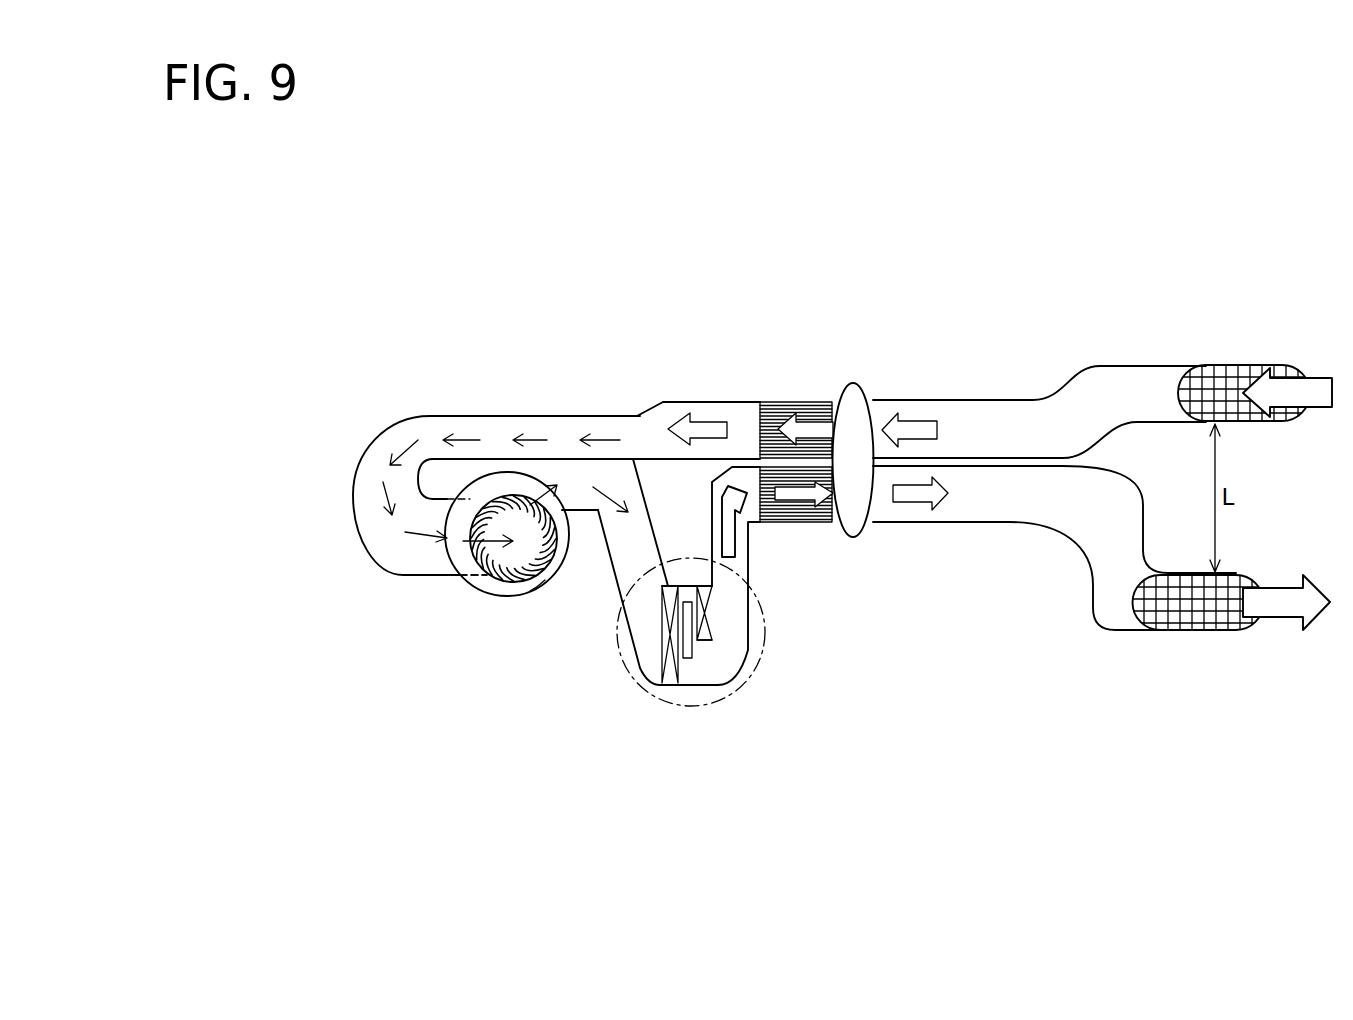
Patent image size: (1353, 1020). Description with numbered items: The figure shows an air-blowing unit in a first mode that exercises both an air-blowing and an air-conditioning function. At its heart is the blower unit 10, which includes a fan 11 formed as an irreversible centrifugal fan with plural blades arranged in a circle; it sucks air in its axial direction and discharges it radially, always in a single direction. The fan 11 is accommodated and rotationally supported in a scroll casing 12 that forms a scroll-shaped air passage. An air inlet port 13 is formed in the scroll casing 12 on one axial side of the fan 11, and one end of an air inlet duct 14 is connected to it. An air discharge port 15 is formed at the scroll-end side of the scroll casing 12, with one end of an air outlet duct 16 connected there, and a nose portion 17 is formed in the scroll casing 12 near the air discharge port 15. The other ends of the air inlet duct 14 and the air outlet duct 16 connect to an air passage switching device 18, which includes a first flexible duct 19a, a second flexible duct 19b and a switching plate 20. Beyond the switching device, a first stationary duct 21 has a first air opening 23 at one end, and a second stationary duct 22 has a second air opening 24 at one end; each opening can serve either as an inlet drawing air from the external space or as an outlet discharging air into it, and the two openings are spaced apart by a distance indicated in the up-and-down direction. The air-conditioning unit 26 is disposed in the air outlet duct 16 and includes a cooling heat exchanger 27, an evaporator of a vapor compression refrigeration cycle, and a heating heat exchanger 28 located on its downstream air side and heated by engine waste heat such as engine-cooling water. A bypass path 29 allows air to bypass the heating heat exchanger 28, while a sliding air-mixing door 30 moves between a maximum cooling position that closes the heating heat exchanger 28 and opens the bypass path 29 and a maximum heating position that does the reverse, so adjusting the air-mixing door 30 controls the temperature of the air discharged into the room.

The blower unit 10 is at (520, 615).
The fan 11 is at (550, 576).
The scroll casing 12 is at (480, 591).
The air inlet port 13 is at (560, 582).
The air inlet duct 14 is at (470, 416).
The air discharge port 15 is at (510, 488).
The air outlet duct 16 is at (620, 597).
The nose portion 17 is at (562, 510).
The air passage switching device 18 is at (766, 472).
The first flexible duct 19a is at (772, 400).
The second flexible duct 19b is at (797, 525).
The switching plate 20 is at (857, 390).
The first stationary duct 21 is at (1008, 400).
The second stationary duct 22 is at (975, 514).
The first air opening 23 is at (1222, 363).
The second air opening 24 is at (1192, 632).
The air-conditioning unit 26 is at (779, 627).
The cooling heat exchanger 27 is at (642, 690).
The heating heat exchanger 28 is at (718, 622).
The bypass path 29 is at (714, 660).
The air-mixing door 30 is at (690, 660).